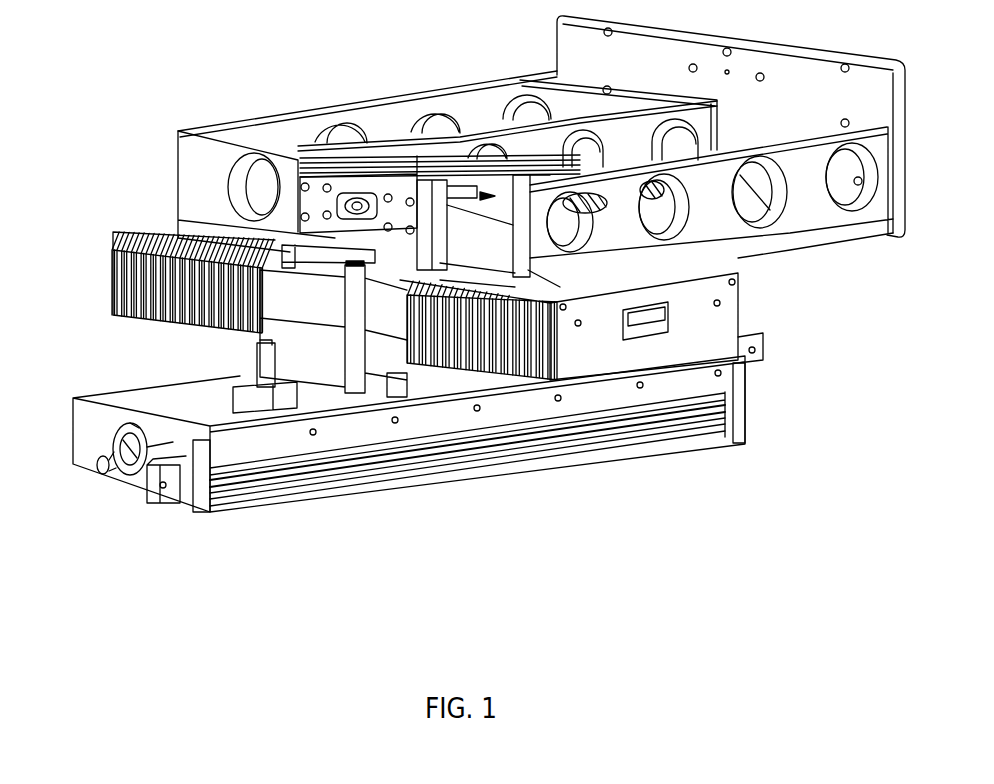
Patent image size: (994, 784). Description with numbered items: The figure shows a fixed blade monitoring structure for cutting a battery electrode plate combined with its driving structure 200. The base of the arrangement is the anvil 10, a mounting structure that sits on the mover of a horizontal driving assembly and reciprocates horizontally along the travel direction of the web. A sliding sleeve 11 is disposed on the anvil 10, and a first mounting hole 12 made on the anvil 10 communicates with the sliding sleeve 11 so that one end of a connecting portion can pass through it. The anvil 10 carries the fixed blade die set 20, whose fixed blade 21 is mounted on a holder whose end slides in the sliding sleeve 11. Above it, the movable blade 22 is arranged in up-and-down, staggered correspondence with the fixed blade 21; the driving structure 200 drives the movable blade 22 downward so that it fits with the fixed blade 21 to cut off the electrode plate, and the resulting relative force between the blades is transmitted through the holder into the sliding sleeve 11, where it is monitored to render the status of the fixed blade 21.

The anvil 10 is at (110, 467).
The sliding sleeve 11 is at (173, 497).
The first mounting hole 12 is at (230, 490).
The fixed blade die set 20 is at (303, 492).
The fixed blade 21 is at (377, 477).
The movable blade 22 is at (438, 458).
The driving structure 200 is at (387, 325).